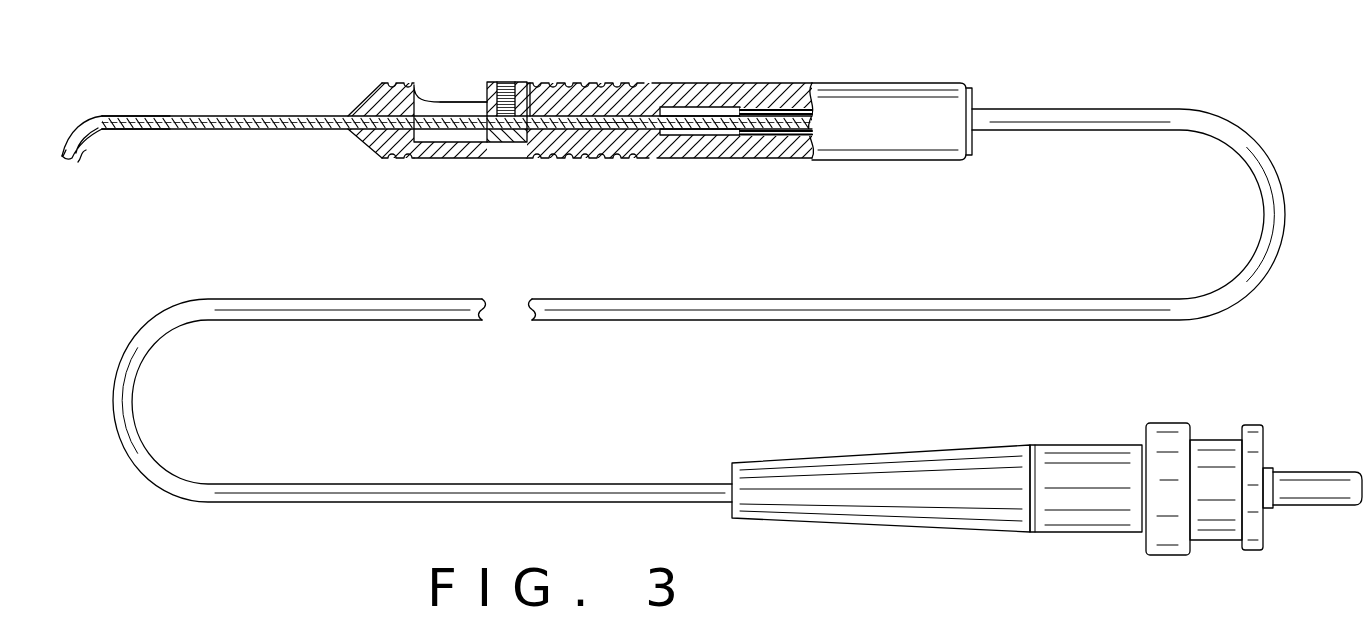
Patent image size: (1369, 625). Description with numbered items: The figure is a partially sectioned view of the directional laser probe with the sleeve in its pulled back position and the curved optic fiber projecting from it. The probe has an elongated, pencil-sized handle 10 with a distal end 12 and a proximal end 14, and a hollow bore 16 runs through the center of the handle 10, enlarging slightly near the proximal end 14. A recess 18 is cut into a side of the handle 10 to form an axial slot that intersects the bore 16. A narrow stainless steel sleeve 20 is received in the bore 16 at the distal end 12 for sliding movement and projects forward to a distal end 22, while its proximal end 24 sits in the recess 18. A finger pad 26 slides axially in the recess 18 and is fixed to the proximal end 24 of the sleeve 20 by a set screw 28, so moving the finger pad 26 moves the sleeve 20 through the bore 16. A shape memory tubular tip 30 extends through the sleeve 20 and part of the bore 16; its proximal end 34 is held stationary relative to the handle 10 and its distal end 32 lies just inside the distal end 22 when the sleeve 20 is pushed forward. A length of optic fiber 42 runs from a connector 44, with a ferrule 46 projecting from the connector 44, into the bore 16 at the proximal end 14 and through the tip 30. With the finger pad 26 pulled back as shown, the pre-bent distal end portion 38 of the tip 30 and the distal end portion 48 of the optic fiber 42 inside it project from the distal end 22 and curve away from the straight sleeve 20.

The handle 10 is at (662, 83).
The distal end of handle 12 is at (347, 112).
The proximal end of handle 14 is at (973, 100).
The bore 16 is at (708, 108).
The recess 18 is at (443, 100).
The sleeve 20 is at (184, 116).
The distal end of sleeve 22 is at (104, 116).
The proximal end of sleeve 24 is at (570, 82).
The finger pad 26 is at (522, 80).
The set screw 28 is at (503, 80).
The tubular tip 30 is at (593, 113).
The distal end of tip 32 is at (76, 160).
The proximal end of tip 34 is at (768, 132).
The distal end portion of tip 38 is at (74, 125).
The optic fiber 42 is at (668, 302).
The connector 44 is at (1053, 523).
The ferrule 46 is at (1318, 497).
The distal end portion of optic fiber 48 is at (99, 158).